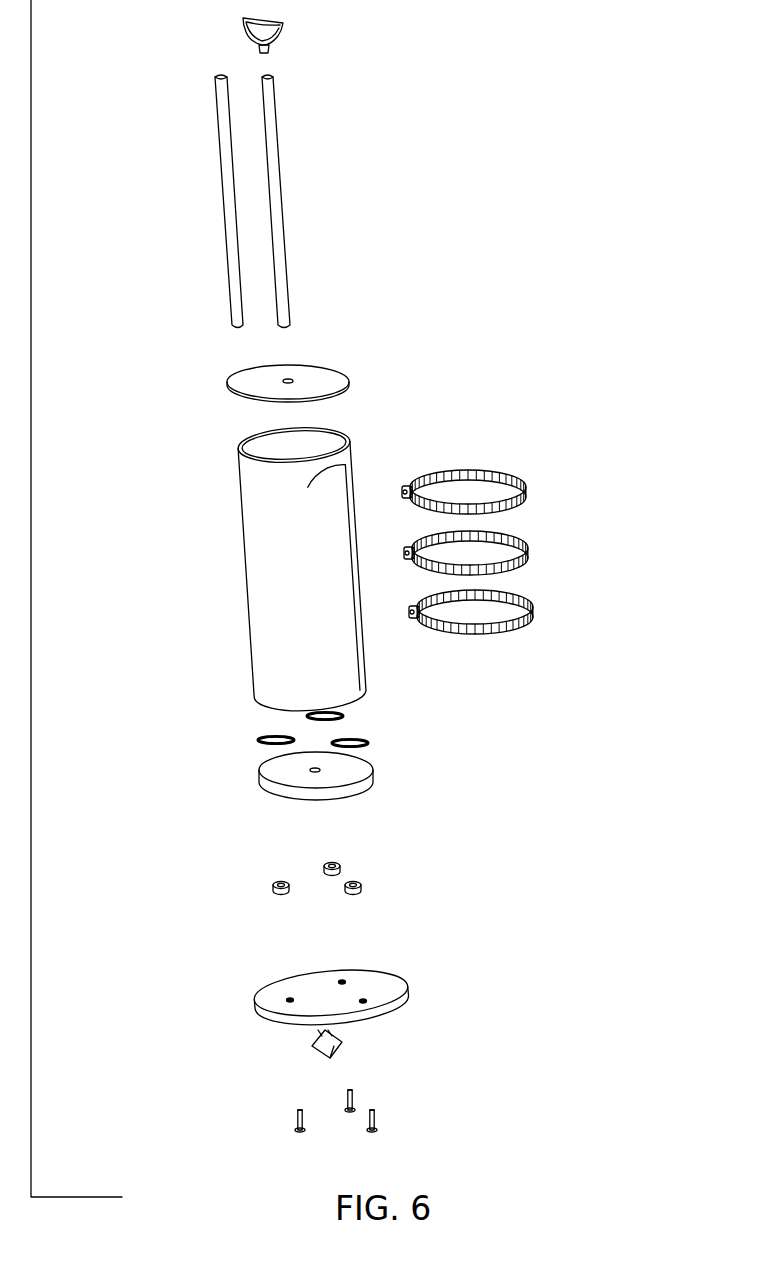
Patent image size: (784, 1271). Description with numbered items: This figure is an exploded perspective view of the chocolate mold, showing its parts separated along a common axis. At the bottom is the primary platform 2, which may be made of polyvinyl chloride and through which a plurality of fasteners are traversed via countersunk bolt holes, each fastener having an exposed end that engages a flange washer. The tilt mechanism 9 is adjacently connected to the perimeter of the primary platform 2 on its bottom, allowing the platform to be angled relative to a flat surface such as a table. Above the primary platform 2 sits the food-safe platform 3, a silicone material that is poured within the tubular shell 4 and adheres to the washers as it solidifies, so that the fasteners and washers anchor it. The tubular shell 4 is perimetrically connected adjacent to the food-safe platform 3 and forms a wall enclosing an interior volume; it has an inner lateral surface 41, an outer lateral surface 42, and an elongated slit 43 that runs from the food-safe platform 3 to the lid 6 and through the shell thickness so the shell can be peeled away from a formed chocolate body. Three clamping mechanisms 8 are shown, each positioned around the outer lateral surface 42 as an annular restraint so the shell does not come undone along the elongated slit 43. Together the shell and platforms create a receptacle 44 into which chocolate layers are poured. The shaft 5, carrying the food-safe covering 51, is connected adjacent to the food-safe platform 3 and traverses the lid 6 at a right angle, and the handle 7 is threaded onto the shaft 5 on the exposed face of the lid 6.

The primary platform 2 is at (406, 1003).
The food-safe platform 3 is at (270, 790).
The tubular shell 4 is at (290, 544).
The inner lateral surface 41 is at (330, 438).
The outer lateral surface 42 is at (257, 536).
The elongated slit 43 is at (330, 470).
The receptacle 44 is at (255, 436).
The shaft 5 is at (278, 203).
The food-safe covering 51 is at (228, 180).
The lid 6 is at (252, 381).
The handle 7 is at (283, 23).
The clamping mechanism 8 is at (527, 493).
The tilt mechanism 9 is at (303, 1042).